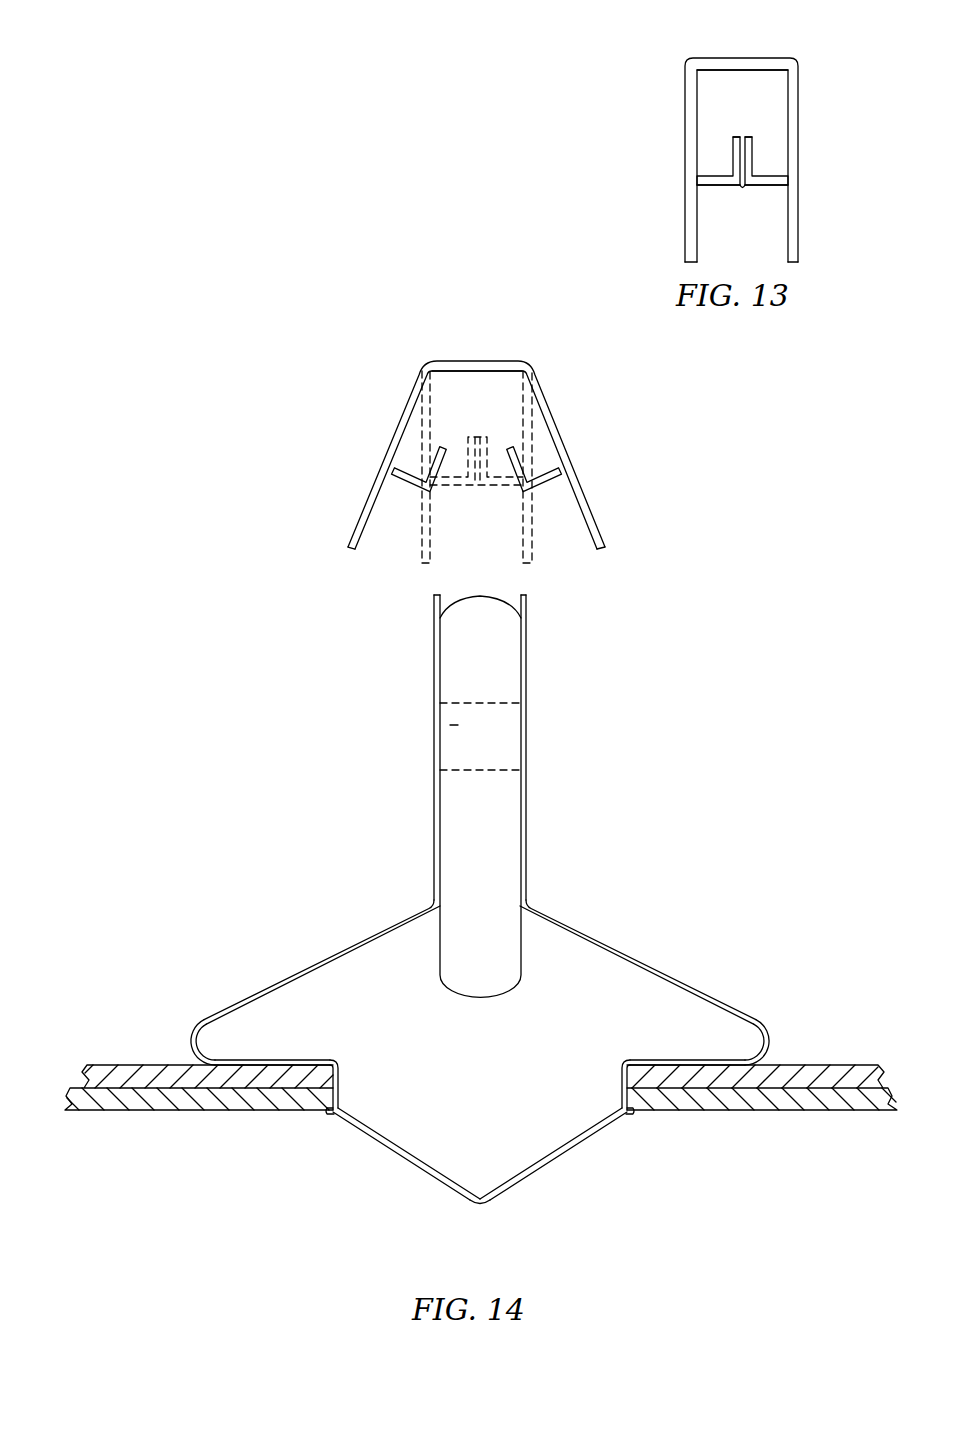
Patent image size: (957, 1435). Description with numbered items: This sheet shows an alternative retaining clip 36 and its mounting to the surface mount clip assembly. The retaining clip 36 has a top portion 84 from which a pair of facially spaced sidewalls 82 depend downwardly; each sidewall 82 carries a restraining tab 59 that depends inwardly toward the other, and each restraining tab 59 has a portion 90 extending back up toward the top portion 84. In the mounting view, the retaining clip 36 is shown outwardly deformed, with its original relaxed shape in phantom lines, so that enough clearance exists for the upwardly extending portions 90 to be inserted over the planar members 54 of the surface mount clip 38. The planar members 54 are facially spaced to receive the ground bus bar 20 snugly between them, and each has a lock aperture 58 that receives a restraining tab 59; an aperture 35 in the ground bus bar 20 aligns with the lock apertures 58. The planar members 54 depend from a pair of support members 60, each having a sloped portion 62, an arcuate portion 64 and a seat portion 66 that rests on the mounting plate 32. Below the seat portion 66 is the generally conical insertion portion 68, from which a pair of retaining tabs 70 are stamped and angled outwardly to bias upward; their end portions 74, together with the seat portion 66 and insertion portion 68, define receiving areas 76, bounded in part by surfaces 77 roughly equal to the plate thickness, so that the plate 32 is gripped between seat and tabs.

In FIG. 14, the ground bus bar 20 is at (506, 858).
In FIG. 14, the panel 32 is at (870, 1064).
In FIG. 14, the aperture 35 is at (440, 725).
In FIG. 13, the retaining clip 36 is at (641, 65).
In FIG. 14, the retaining clip 36 is at (338, 360).
In FIG. 14, the tube assembly 38 is at (312, 663).
In FIG. 14, the planar members 54 is at (434, 613).
In FIG. 14, the lock aperture 58 is at (437, 758).
In FIG. 13, the restraining tab 59 is at (760, 186).
In FIG. 14, the restraining tab 59 is at (407, 490).
In FIG. 14, the support member 60 is at (232, 988).
In FIG. 14, the sloped portion 62 is at (323, 951).
In FIG. 14, the arcuate portion 64 is at (192, 1041).
In FIG. 14, the seat portion 66 is at (236, 1060).
In FIG. 14, the insertion portion 68 is at (478, 1213).
In FIG. 14, the retaining tab 70 is at (351, 1128).
In FIG. 14, the end portion 74 is at (327, 1114).
In FIG. 14, the receiving area 76 is at (316, 1076).
In FIG. 14, the surface 77 is at (327, 1063).
In FIG. 13, the sidewall 82 is at (685, 115).
In FIG. 14, the sidewall 82 is at (397, 432).
In FIG. 13, the top portion 84 is at (751, 58).
In FIG. 14, the top portion 84 is at (483, 361).
In FIG. 13, the portion 90 is at (750, 137).
In FIG. 14, the portion 90 is at (509, 447).